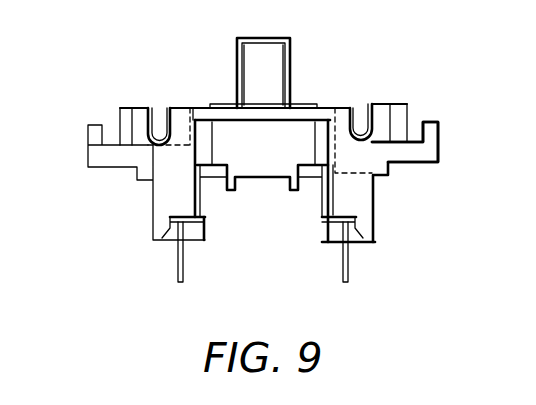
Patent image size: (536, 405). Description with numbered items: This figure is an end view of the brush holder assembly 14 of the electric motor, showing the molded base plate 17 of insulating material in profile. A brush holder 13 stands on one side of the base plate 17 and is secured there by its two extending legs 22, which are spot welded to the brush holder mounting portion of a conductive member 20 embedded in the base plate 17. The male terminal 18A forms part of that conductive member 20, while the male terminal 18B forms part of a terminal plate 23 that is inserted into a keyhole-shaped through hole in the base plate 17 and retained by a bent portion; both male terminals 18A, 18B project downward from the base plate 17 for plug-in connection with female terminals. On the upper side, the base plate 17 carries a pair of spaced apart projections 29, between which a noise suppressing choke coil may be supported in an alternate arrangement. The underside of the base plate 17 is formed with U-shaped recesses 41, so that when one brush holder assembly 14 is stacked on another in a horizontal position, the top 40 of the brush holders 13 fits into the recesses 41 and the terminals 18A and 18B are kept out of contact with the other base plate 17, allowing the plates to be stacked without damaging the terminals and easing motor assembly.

The brush holder 13 is at (270, 36).
The brush holder assembly 14 is at (107, 170).
The base plate 17 is at (433, 150).
The male terminal 18A is at (350, 255).
The male terminal 18B is at (175, 273).
The conductive member 20 is at (348, 282).
The extending leg 22 is at (220, 103).
The terminal plate 23 is at (178, 265).
The projection 29 is at (127, 115).
The top of brush holder 40 is at (255, 37).
The U-shaped recess 41 is at (262, 178).